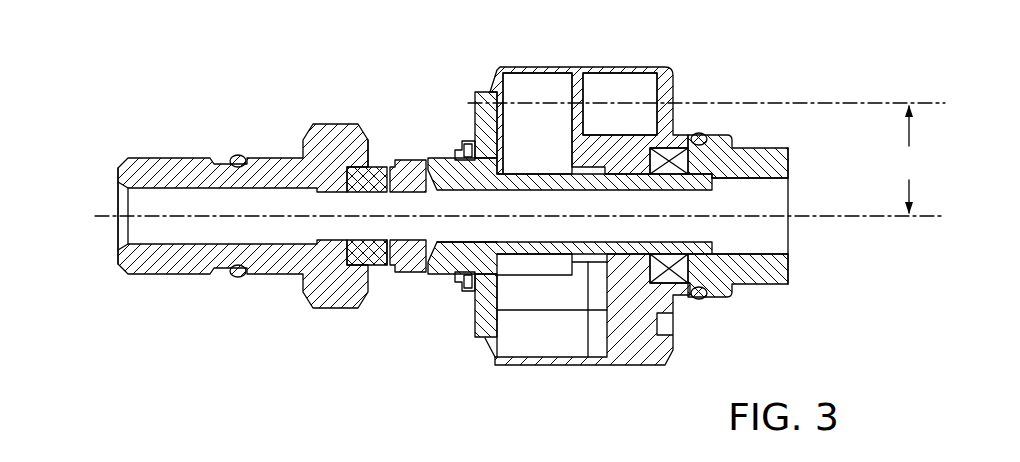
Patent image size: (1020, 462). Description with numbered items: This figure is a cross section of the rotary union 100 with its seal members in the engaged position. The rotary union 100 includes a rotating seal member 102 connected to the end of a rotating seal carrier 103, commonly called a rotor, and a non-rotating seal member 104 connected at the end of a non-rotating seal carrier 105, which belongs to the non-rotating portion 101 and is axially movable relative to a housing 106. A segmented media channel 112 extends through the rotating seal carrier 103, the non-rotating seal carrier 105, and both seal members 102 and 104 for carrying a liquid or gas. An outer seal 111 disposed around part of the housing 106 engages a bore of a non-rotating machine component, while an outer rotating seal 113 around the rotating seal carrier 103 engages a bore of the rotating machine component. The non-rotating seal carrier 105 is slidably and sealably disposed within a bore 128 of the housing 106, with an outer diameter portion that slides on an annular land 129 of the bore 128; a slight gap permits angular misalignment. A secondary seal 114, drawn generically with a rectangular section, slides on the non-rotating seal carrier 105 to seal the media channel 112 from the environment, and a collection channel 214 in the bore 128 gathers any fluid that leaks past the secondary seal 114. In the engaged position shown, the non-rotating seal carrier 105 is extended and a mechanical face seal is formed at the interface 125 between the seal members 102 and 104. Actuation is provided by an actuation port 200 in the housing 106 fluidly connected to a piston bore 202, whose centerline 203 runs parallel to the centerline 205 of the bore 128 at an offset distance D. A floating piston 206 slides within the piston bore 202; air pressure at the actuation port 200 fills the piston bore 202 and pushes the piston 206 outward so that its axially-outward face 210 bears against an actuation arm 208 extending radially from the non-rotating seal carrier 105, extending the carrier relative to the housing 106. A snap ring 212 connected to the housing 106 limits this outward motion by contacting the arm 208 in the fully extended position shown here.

The rotary union 100 is at (391, 86).
The non-rotating portion 101 is at (638, 378).
The rotating seal member 102 is at (370, 178).
The rotating seal carrier 103 is at (296, 172).
The non-rotating seal member 104 is at (413, 178).
The non-rotating seal carrier 105 is at (442, 262).
The housing 106 is at (767, 148).
The outer seal 111 is at (704, 294).
The media channel 112 is at (795, 180).
The outer rotating seal 113 is at (246, 156).
The secondary seal 114 is at (678, 296).
The interface 125 is at (390, 278).
The bore 128 is at (757, 203).
The land 129 is at (770, 250).
The actuation port 200 is at (680, 97).
The piston bore 202 is at (618, 92).
The centerline of piston bore 203 is at (800, 102).
The centerline of bore 205 is at (897, 218).
The floating piston 206 is at (532, 90).
The actuation arm 208 is at (475, 92).
The axially-outward face 210 is at (480, 74).
The snap ring 212 is at (462, 297).
The collection channel 214 is at (589, 264).
The offset distance D is at (910, 159).